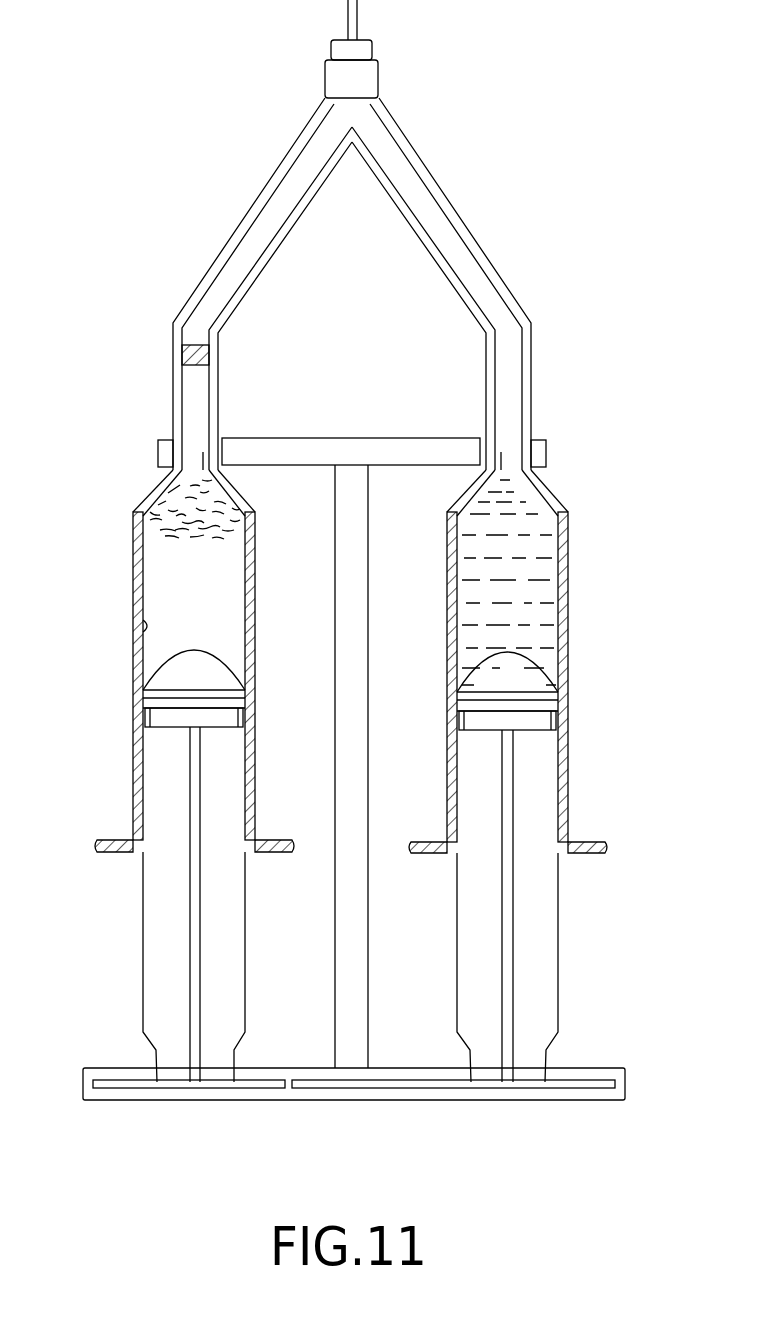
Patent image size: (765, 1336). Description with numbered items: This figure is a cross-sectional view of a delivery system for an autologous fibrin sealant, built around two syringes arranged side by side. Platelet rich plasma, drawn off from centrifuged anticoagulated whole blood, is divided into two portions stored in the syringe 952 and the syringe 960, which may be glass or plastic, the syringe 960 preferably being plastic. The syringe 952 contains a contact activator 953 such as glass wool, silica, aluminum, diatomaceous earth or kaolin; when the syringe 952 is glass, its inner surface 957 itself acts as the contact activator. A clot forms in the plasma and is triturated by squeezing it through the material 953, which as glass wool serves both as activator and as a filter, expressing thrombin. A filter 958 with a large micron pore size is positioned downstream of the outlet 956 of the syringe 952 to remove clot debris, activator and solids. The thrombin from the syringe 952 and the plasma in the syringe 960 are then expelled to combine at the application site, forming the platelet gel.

The syringe 952 is at (166, 797).
The contact activator 953 is at (168, 505).
The outlet 956 is at (190, 460).
The inner surface 957 is at (140, 636).
The filter 958 is at (209, 352).
The syringe 960 is at (568, 627).